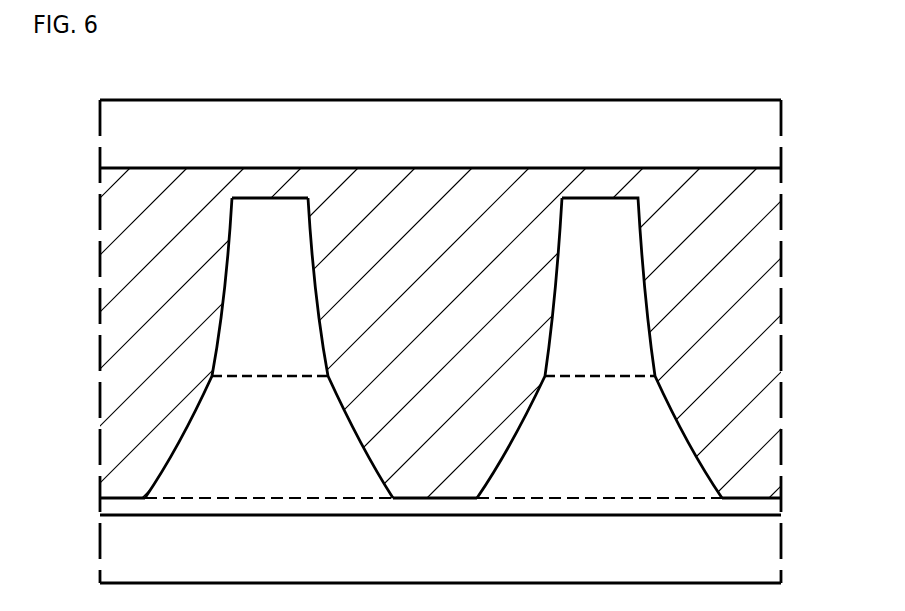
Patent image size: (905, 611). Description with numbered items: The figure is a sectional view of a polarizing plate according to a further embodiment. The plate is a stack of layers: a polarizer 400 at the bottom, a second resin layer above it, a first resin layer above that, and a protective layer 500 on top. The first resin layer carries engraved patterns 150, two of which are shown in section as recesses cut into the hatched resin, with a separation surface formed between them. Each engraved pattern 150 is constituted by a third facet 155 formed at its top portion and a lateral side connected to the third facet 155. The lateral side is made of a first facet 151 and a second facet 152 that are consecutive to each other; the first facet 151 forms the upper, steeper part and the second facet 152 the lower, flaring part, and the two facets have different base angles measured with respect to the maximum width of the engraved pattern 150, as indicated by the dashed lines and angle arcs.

The protective layer 500 is at (768, 137).
The polarizer 400 is at (768, 547).
The engraved pattern 150 is at (343, 222).
The first facet 151 is at (228, 294).
The second facet 152 is at (190, 424).
The third facet 155 is at (247, 198).